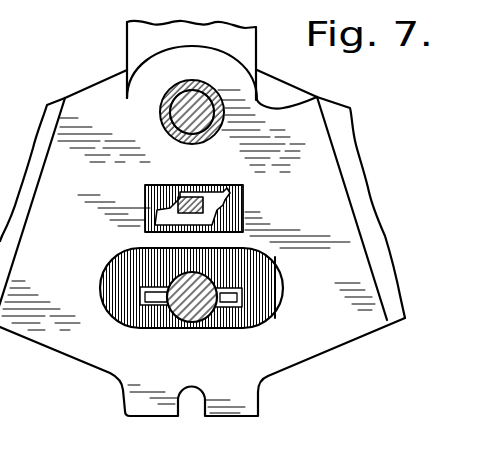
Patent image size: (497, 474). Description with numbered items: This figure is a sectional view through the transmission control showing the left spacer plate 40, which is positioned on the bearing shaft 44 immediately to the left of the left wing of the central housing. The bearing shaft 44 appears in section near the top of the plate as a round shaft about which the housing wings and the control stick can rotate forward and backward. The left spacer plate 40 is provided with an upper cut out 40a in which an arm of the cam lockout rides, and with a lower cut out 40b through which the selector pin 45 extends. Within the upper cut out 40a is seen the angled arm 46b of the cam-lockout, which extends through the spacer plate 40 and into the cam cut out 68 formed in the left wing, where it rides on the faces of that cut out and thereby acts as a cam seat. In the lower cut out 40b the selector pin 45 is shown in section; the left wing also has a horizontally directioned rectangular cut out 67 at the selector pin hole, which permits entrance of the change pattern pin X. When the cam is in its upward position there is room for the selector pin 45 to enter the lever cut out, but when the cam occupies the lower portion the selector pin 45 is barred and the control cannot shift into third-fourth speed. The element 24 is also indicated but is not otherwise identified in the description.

The left spacer plate 40 is at (337, 218).
The cut out 40a is at (243, 193).
The cut out 40b is at (258, 324).
The pivot arm bracket 24 is at (243, 83).
The bearing shaft 44 is at (207, 88).
The angled arm 46b is at (190, 197).
The cut out 68 is at (173, 218).
The selector pin 45 is at (182, 307).
The rectangular cut out 67 is at (242, 302).
The change pattern pin X is at (155, 302).